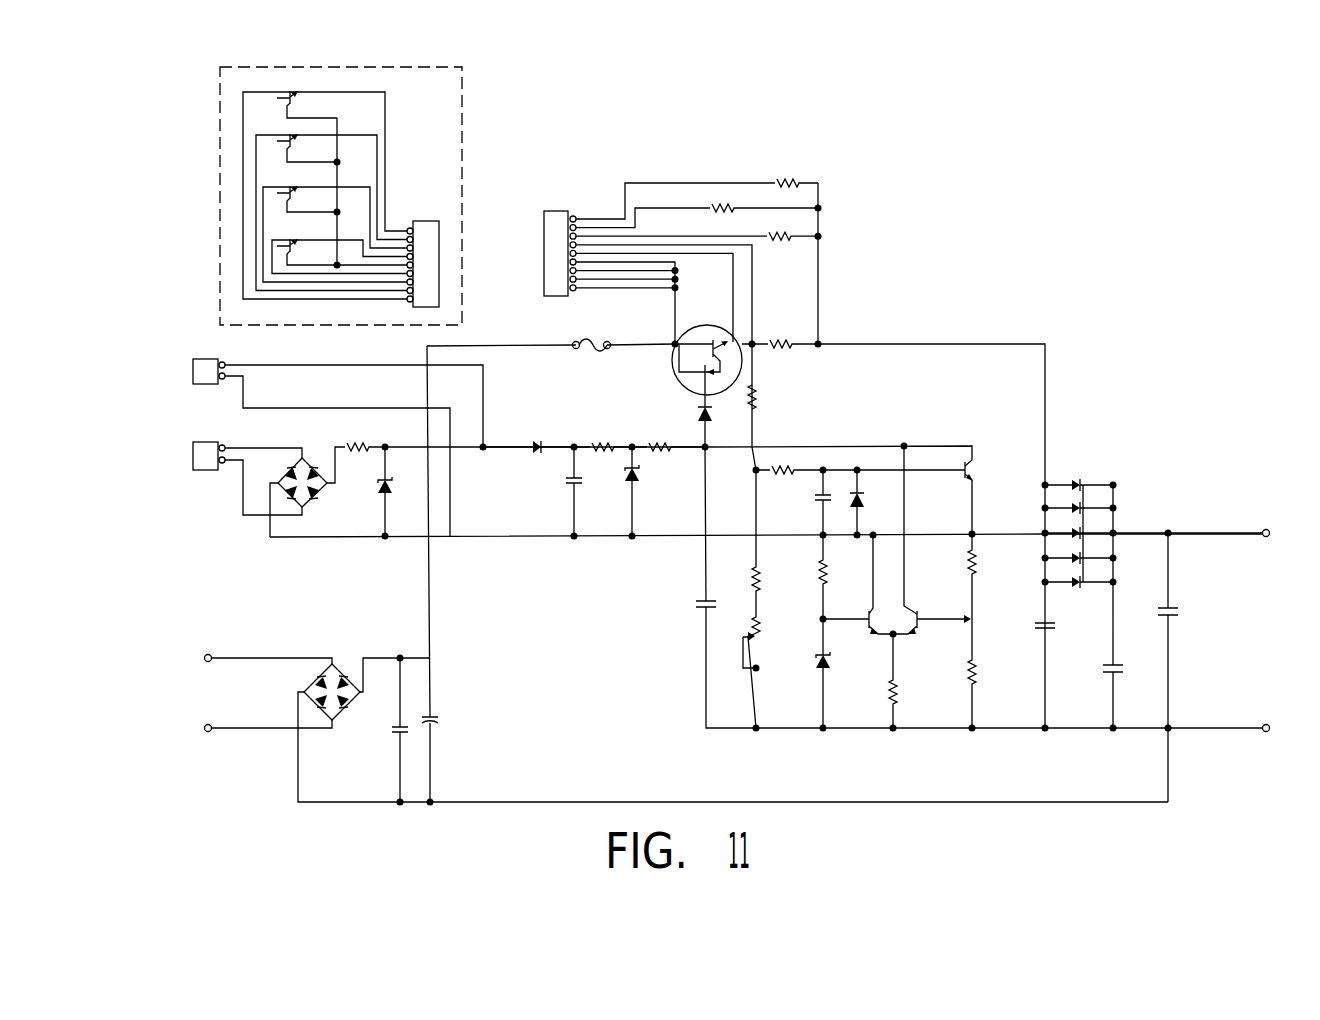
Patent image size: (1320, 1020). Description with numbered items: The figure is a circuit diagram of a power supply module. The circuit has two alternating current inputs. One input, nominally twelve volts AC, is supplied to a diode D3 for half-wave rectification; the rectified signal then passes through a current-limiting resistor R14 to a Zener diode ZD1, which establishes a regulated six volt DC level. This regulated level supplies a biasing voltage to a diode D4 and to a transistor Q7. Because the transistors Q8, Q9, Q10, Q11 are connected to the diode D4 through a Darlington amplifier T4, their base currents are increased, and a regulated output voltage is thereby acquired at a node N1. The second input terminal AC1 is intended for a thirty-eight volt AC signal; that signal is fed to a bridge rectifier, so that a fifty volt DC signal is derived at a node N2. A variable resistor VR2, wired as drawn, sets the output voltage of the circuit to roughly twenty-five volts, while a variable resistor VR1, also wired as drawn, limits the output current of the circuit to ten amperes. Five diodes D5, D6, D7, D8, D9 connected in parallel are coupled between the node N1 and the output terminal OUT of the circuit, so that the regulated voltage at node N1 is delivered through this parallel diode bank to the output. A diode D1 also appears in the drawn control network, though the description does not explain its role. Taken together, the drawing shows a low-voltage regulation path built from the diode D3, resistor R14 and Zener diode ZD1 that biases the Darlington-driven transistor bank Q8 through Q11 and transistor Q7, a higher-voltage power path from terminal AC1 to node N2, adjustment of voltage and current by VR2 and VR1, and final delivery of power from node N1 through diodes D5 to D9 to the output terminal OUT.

The transistor Q8 is at (325, 195).
The transistor Q9 is at (331, 212).
The transistor Q10 is at (335, 234).
The transistor Q11 is at (339, 256).
The Darlington amplifier T4 is at (690, 360).
The node N1 is at (836, 265).
The node N2 is at (443, 574).
The diode D3 is at (528, 432).
The current-limiting resistor R14 is at (603, 432).
The Zener diode ZD1 is at (652, 492).
The diode D4 is at (721, 414).
The diode D1 is at (873, 503).
The transistor Q7 is at (985, 494).
The variable resistor VR1 is at (772, 682).
The variable resistor VR2 is at (992, 631).
The diode D5 is at (1079, 472).
The diode D6 is at (1079, 498).
The diode D7 is at (1152, 523).
The diode D8 is at (1079, 548).
The diode D9 is at (1079, 573).
The input terminal AC1 is at (276, 693).
The output terminal OUT is at (1225, 666).